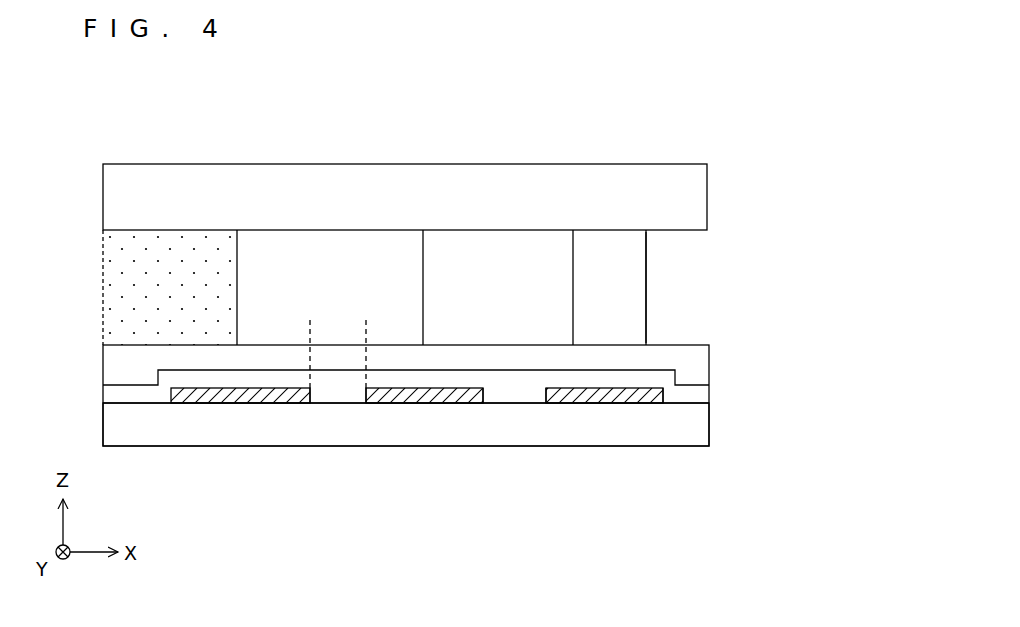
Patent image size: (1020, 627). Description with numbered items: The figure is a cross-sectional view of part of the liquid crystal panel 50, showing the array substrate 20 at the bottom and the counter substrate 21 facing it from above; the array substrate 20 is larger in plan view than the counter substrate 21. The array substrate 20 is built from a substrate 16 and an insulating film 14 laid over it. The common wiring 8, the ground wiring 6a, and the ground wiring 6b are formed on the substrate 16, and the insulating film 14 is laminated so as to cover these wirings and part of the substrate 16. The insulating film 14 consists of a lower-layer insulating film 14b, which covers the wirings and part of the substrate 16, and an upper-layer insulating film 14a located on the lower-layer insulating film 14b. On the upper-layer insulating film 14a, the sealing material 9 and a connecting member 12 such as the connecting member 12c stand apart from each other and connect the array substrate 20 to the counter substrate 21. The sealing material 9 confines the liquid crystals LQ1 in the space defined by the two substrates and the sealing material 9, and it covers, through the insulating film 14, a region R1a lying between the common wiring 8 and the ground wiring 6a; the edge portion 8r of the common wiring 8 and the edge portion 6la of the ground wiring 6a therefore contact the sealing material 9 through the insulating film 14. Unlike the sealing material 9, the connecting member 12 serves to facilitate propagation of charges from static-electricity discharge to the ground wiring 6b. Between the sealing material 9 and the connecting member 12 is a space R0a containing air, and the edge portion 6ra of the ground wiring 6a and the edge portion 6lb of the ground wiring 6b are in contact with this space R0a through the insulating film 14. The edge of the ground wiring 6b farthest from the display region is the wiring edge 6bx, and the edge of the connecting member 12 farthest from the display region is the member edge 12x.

The liquid crystal panel 50 is at (711, 129).
The counter substrate 21 is at (97, 164).
The array substrate 20 is at (97, 345).
The liquid crystals LQ1 is at (122, 300).
The connecting member 12 is at (455, 229).
The connecting member 12c is at (592, 258).
The member edge 12x is at (649, 288).
The sealing material 9 is at (365, 257).
The space R0a is at (505, 257).
The region R1a is at (366, 320).
The insulating film 14 is at (783, 346).
The upper-layer insulating film 14a is at (700, 366).
The lower-layer insulating film 14b is at (700, 394).
The substrate 16 is at (700, 431).
The common wiring 8 is at (285, 404).
The edge portion 8r is at (297, 386).
The ground wiring 6a is at (462, 404).
The edge portion 6la is at (373, 386).
The edge portion 6ra is at (478, 386).
The ground wiring 6b is at (600, 404).
The edge portion 6lb is at (552, 386).
The wiring edge 6bx is at (665, 396).